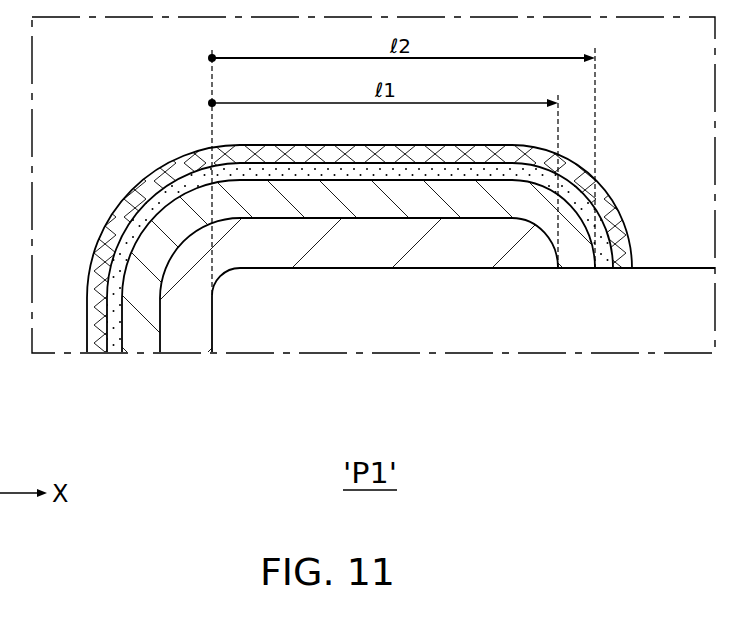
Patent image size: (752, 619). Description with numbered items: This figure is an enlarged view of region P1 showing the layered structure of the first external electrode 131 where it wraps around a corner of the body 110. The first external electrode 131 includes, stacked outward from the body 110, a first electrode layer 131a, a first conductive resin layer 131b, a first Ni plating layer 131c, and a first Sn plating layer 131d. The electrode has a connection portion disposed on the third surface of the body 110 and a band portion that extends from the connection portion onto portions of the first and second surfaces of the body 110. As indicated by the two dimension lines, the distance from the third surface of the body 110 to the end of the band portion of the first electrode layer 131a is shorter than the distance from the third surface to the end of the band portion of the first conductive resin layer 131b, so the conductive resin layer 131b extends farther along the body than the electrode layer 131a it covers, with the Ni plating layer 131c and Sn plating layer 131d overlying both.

The body 110 is at (662, 268).
The first external electrode 131 is at (334, 301).
The first electrode layer 131a is at (360, 319).
The first conductive resin layer 131b is at (140, 350).
The first Ni plating layer 131c is at (117, 353).
The first Sn plating layer 131d is at (98, 353).